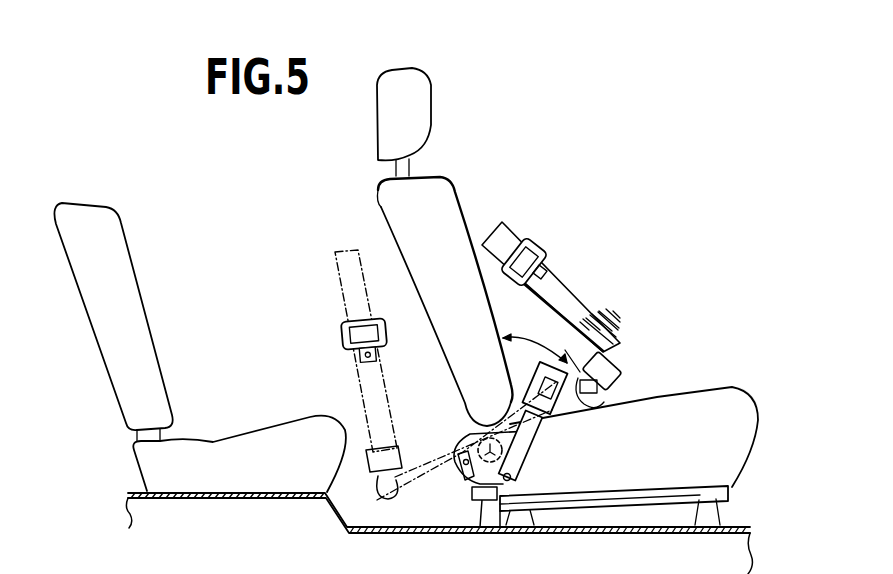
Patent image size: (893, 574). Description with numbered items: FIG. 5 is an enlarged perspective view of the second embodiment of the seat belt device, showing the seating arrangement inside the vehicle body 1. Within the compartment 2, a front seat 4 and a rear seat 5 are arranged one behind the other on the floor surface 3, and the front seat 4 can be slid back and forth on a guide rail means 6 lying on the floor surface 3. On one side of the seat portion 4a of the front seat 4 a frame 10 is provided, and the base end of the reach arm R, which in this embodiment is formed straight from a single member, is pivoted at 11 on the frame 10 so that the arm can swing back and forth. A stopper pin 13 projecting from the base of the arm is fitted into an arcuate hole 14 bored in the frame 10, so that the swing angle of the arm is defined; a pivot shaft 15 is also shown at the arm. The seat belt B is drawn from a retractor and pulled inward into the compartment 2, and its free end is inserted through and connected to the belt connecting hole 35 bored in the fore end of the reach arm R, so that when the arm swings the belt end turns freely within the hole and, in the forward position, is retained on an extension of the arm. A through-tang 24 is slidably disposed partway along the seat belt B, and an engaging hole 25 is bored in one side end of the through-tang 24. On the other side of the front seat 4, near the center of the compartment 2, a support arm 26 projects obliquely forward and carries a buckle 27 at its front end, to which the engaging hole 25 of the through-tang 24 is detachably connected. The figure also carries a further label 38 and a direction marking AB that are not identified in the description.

The vehicle body 1 is at (178, 507).
The compartment 2 is at (245, 299).
The floor surface 3 is at (408, 517).
The front seat 4 is at (658, 406).
The seat portion 4a is at (748, 411).
The rear seat 5 is at (214, 436).
The guide rail means 6 is at (728, 495).
The frame 10 is at (470, 487).
The pivot 11 is at (490, 424).
The stopper pin 13 is at (466, 448).
The arcuate hole 14 is at (463, 479).
The pivot shaft 15 is at (574, 402).
The through-tang 24 is at (530, 247).
The engaging hole 25 is at (547, 272).
The support arm 26 is at (522, 465).
The buckle 27 is at (523, 373).
The belt connecting hole 35 is at (385, 493).
The tongue plate 38 is at (608, 404).
The seat belt B is at (581, 286).
The reach arm R is at (466, 441).
The direction of movement AB is at (576, 338).